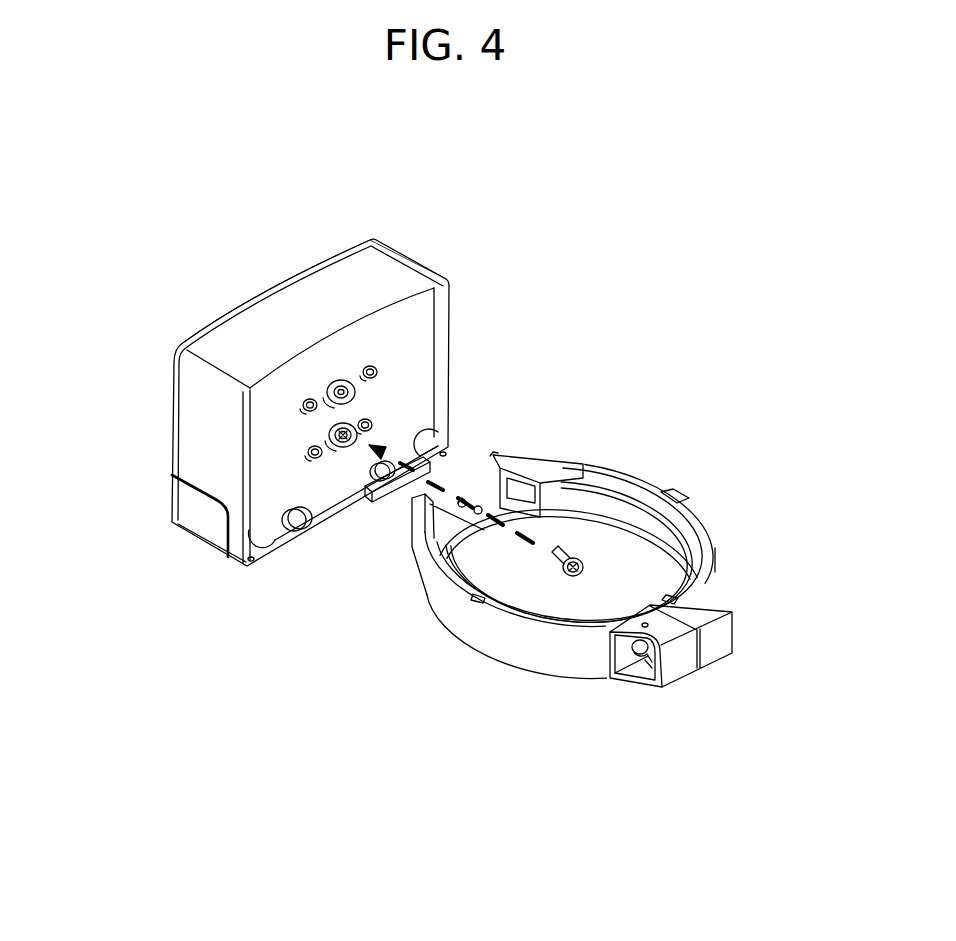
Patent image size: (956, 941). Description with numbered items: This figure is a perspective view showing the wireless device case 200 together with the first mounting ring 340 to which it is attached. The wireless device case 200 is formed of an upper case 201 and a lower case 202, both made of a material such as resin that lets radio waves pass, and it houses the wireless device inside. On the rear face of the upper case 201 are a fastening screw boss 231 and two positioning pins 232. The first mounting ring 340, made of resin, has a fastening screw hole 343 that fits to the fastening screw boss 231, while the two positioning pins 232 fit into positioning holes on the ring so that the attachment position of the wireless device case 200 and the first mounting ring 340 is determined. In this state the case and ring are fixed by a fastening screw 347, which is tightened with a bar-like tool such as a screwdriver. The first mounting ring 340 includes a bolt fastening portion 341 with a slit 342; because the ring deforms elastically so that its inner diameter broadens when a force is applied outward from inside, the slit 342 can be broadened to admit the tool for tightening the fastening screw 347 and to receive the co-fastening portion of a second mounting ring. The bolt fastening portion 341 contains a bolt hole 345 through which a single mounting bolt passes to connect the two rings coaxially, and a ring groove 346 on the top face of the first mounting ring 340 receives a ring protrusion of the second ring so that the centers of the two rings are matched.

The wireless device case 200 is at (265, 268).
The upper case 201 is at (371, 262).
The lower case 202 is at (180, 522).
The fastening screw boss 231 is at (343, 447).
The positioning pins 232 is at (358, 421).
The first mounting ring 340 is at (648, 480).
The bolt fastening portion 341 is at (722, 605).
The slit 342 is at (700, 655).
The fastening screw hole 343 is at (470, 502).
The bolt hole 345 is at (643, 653).
The ring groove 346 is at (686, 530).
The fastening screw 347 is at (555, 561).